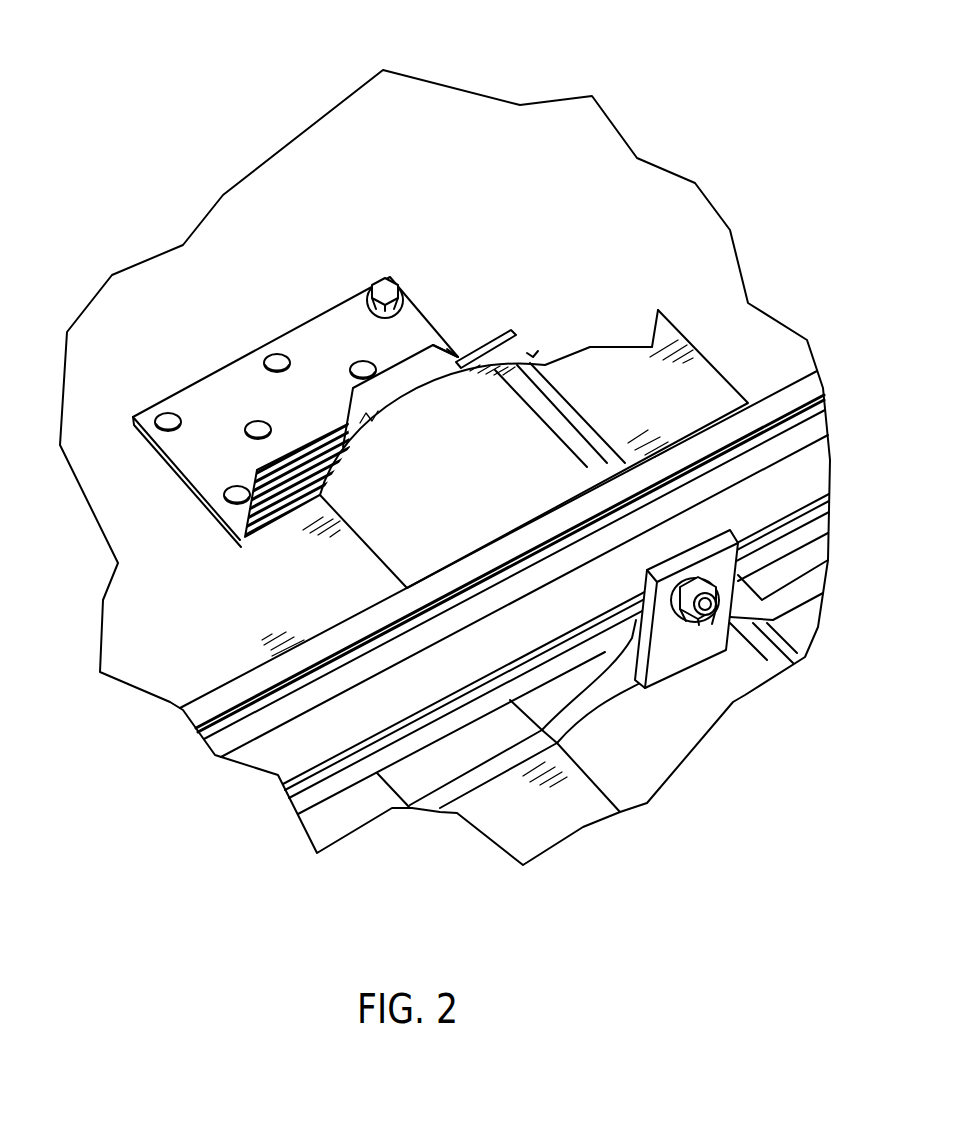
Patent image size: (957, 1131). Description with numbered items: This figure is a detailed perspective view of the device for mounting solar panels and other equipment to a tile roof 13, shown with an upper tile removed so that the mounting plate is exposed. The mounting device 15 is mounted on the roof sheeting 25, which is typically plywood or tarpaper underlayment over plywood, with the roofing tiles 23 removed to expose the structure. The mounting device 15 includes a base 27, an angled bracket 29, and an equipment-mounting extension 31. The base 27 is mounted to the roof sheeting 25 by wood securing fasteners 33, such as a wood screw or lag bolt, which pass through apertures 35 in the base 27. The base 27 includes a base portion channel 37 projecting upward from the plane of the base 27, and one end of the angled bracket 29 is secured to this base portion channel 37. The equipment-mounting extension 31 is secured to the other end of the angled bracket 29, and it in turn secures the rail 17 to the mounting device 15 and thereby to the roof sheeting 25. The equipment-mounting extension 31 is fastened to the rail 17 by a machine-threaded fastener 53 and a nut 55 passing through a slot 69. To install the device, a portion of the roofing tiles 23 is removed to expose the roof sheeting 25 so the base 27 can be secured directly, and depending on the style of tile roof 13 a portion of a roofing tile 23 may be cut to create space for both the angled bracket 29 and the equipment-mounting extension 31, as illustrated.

The tile roof 13 is at (274, 97).
The mounting device 15 is at (210, 340).
The rail 17 is at (780, 383).
The roofing tile 23 is at (549, 370).
The roof sheeting 25 is at (533, 102).
The base 27 is at (447, 347).
The angled bracket 29 is at (385, 372).
The equipment-mounting extension 31 is at (682, 556).
The wood securing fastener 33 is at (385, 280).
The aperture 35 is at (277, 353).
The base portion channel 37 is at (507, 333).
The machine-threaded fastener 53 is at (678, 628).
The nut 55 is at (708, 618).
The slot 69 is at (670, 620).